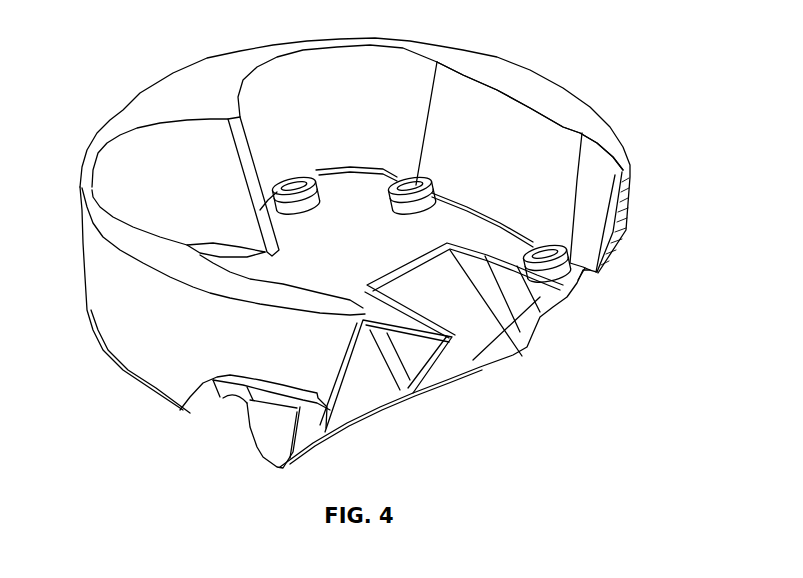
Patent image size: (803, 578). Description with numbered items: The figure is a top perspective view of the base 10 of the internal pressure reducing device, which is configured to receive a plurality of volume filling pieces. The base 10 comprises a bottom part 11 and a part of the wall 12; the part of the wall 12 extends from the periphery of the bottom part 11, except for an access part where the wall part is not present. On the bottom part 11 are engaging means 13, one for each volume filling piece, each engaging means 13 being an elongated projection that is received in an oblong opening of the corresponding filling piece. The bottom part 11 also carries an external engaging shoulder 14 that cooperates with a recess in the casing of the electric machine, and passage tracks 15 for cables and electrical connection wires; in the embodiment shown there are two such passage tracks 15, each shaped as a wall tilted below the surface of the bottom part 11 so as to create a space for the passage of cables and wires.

The base 10 is at (625, 288).
The bottom part 11 is at (308, 282).
The part of the wall 12 is at (540, 117).
The engaging means 13 is at (412, 192).
The external engaging shoulder 14 is at (272, 423).
The passage track 15 is at (483, 318).